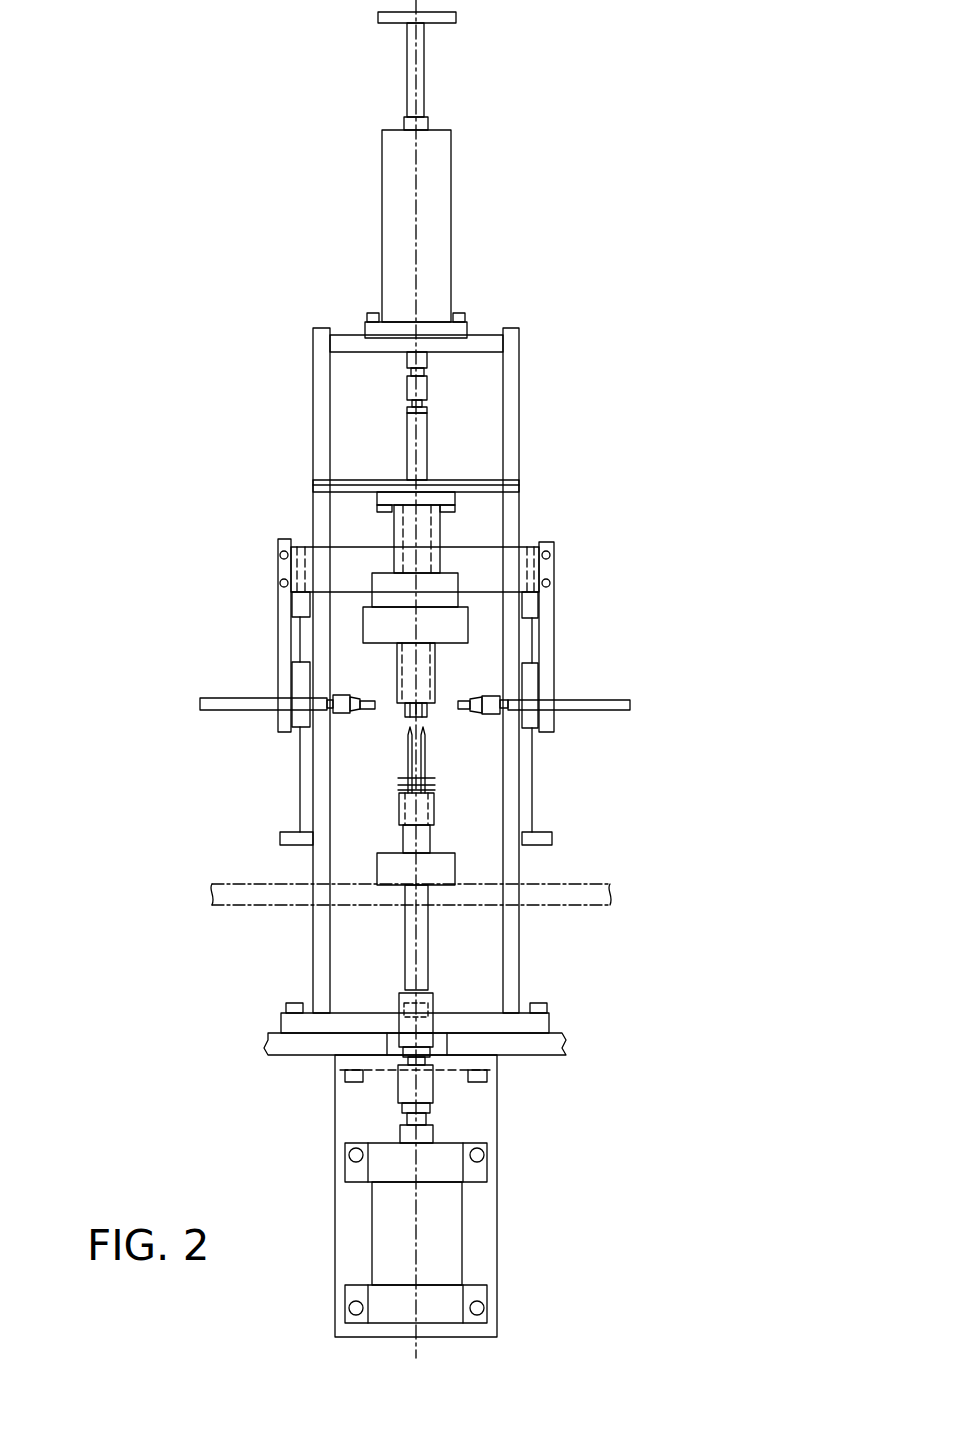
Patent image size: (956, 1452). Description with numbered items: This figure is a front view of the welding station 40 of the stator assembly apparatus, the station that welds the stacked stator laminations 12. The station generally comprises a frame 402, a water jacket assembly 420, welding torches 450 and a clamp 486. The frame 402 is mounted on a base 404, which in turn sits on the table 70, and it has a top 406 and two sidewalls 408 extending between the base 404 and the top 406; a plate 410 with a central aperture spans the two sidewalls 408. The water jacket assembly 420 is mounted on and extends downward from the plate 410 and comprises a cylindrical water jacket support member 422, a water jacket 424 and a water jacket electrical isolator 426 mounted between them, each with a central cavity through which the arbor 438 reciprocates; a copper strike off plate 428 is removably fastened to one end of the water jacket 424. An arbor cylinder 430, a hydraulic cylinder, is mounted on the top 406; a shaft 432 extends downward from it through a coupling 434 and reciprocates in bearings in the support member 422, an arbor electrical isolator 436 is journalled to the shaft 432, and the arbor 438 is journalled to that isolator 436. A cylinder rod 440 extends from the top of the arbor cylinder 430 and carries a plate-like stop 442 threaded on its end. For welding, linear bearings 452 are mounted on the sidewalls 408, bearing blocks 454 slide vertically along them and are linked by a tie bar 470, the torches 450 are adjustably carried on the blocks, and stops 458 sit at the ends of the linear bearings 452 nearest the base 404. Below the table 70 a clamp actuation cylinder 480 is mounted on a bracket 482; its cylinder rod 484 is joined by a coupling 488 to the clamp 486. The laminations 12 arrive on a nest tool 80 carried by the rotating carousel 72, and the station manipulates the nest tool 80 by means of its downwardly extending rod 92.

The welding station 40 is at (227, 333).
The stop 442 is at (458, 18).
The cylinder rod 440 is at (424, 95).
The arbor cylinder 430 is at (433, 240).
The top 406 is at (481, 330).
The sidewalls 408 is at (518, 928).
The plate 410 is at (367, 478).
The coupling 434 is at (428, 390).
The shaft 432 is at (428, 440).
The water jacket assembly 420 is at (480, 577).
The arbor electrical isolator 436 is at (368, 583).
The water jacket support member 422 is at (433, 540).
The water jacket electrical isolator 426 is at (460, 597).
The arbor 438 is at (412, 625).
The water jacket 424 is at (430, 697).
The strike off plate 428 is at (428, 712).
The tie bar 470 is at (538, 552).
The bearing blocks 454 is at (272, 663).
The linear bearings 452 is at (298, 800).
The stops 458 is at (275, 838).
The welding torches 450 is at (598, 697).
The frame 402 is at (205, 768).
The stator laminations 12 is at (395, 770).
The nest tool 80 is at (375, 807).
The carousel 72 is at (213, 902).
The rod 92 is at (426, 952).
The clamp 486 is at (433, 1003).
The base 404 is at (549, 1022).
The table 70 is at (567, 1045).
The coupling 488 is at (431, 1090).
The cylinder rod 484 is at (433, 1118).
The bracket 482 is at (346, 1207).
The clamp actuation cylinder 480 is at (453, 1228).